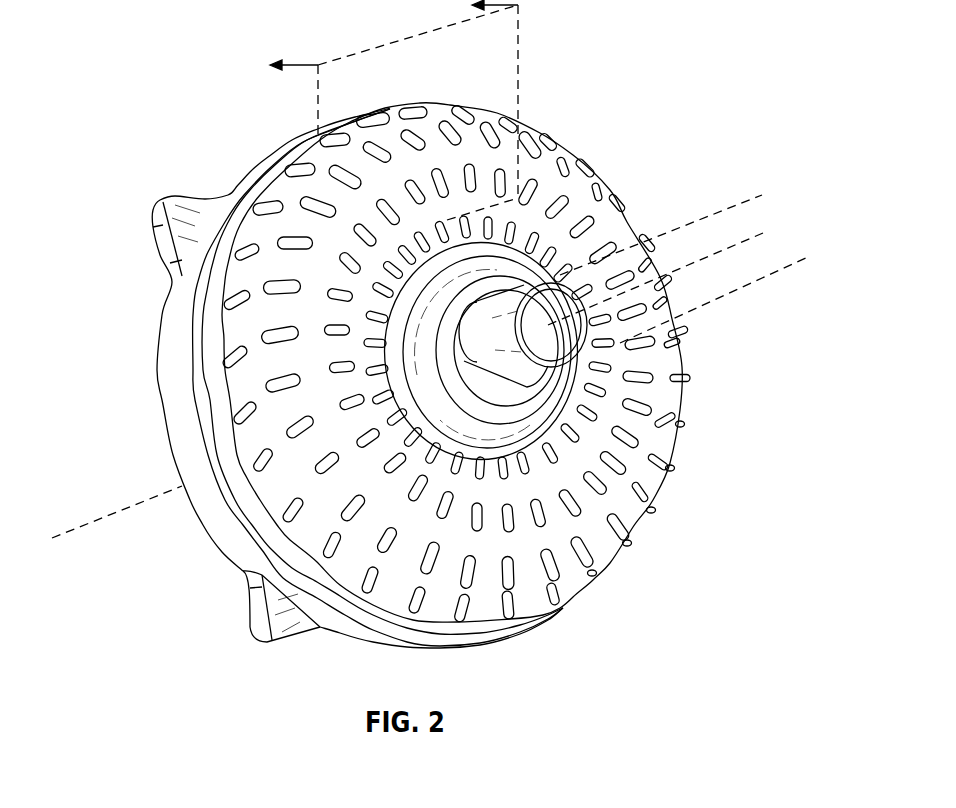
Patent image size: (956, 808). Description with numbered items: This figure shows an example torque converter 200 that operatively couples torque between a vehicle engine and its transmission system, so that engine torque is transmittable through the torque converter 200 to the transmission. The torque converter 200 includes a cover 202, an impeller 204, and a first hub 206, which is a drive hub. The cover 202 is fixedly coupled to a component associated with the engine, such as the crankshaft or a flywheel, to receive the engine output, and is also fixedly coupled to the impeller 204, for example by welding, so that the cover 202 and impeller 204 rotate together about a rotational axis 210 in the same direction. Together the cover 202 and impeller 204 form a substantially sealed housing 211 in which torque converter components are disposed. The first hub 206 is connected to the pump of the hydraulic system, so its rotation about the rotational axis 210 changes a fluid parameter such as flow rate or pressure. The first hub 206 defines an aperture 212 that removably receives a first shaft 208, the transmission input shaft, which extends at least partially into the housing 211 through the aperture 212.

The torque converter 200 is at (190, 81).
The cover 202 is at (157, 371).
The impeller 204 is at (681, 439).
The first hub 206 is at (483, 340).
The first shaft 208 is at (763, 178).
The rotational axis 210 is at (128, 507).
The housing 211 is at (207, 179).
The aperture 212 is at (563, 334).